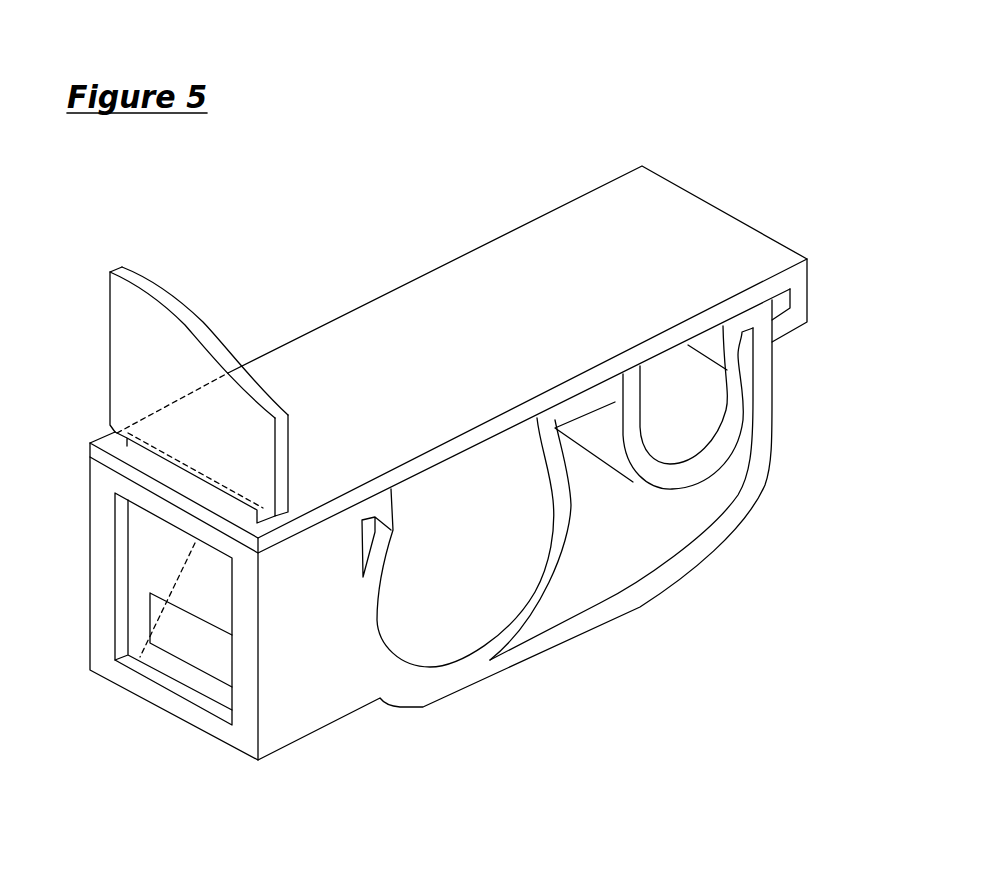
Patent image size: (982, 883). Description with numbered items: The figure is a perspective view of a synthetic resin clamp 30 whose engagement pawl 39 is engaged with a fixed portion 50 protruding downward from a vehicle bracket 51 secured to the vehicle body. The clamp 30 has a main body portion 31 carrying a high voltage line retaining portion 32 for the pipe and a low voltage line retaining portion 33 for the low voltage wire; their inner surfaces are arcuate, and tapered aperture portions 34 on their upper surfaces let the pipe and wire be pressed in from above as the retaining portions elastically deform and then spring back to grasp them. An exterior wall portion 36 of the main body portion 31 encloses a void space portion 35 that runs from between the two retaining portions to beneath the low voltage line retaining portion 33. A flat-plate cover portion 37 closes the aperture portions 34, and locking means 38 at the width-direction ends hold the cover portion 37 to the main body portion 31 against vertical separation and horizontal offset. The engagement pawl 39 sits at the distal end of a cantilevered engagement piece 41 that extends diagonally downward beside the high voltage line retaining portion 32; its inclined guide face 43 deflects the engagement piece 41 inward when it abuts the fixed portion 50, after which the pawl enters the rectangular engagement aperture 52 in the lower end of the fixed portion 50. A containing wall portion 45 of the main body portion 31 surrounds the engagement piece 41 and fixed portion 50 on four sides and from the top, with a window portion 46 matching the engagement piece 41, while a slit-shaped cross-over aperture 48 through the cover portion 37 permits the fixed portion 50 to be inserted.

The clamp 30 is at (397, 86).
The main body portion 31 is at (462, 605).
The high voltage line retaining portion 32 is at (547, 577).
The low voltage line retaining portion 33 is at (690, 463).
The aperture portions 34 is at (675, 352).
The void space portion 35 is at (631, 537).
The exterior wall portion 36 is at (747, 482).
The cover portion 37 is at (368, 327).
The locking means 38 is at (791, 318).
The engagement pawl 39 is at (203, 665).
The engagement piece 41 is at (219, 600).
The guide face 43 is at (190, 650).
The containing wall portion 45 is at (307, 643).
The window portion 46 is at (122, 585).
The cross-over aperture 48 is at (157, 463).
The fixed portion 50 is at (143, 533).
The vehicle bracket 51 is at (148, 330).
The engagement aperture 52 is at (157, 612).